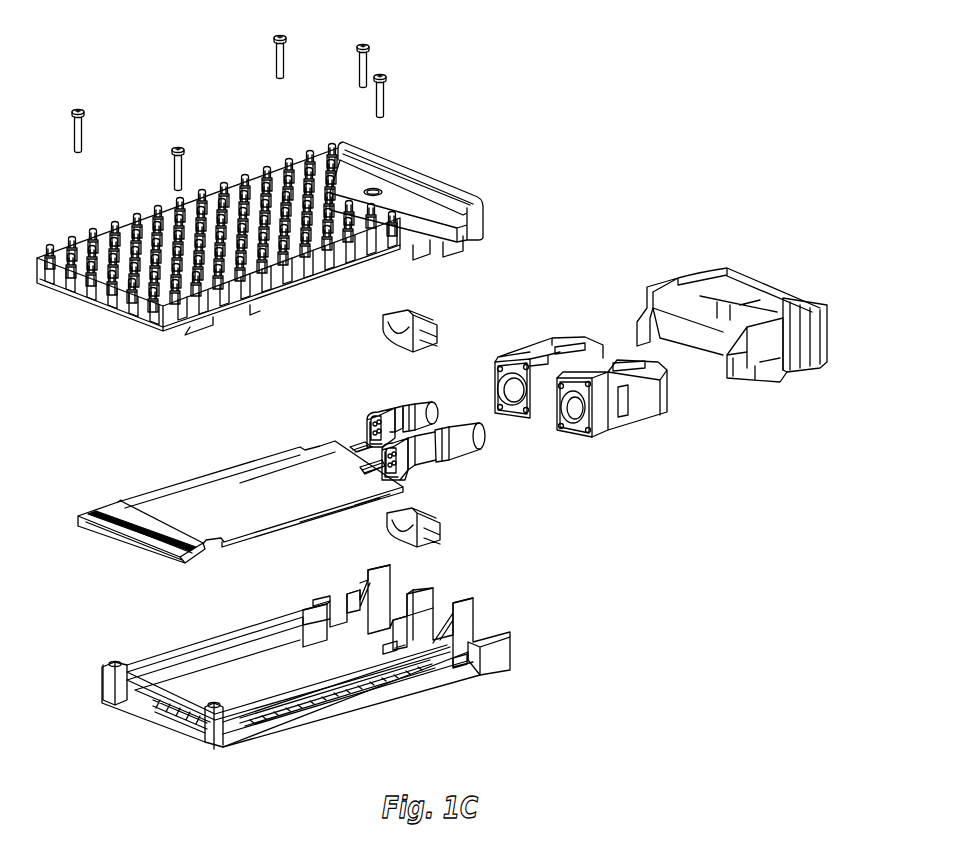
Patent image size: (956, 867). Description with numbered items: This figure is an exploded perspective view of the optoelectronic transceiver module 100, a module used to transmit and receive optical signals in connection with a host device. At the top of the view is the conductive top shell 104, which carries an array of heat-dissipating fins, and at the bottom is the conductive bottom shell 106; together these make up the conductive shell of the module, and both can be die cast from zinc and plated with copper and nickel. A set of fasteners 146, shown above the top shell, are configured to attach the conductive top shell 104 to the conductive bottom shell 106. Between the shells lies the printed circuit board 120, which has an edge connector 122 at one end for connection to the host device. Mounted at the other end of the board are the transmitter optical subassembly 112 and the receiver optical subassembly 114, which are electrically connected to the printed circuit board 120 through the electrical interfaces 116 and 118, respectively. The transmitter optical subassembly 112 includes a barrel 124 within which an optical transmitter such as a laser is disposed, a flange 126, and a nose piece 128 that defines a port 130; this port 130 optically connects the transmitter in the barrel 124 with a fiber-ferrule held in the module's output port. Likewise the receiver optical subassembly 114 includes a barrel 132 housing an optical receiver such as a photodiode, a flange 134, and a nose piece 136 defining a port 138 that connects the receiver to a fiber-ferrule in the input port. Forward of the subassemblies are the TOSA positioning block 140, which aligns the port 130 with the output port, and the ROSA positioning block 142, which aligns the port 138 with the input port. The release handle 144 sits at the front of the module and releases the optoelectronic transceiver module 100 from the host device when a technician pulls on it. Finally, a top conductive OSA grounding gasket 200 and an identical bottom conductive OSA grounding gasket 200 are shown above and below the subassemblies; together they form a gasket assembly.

The optoelectronic transceiver module 100 is at (135, 62).
The conductive top shell 104 is at (451, 229).
The conductive bottom shell 106 is at (415, 680).
The transmitter optical subassembly (TOSA) 112 is at (470, 488).
The receiver optical subassembly (ROSA) 114 is at (364, 384).
The electrical interface 116 is at (418, 470).
The electrical interface 118 is at (362, 446).
The printed circuit board (PCB) 120 is at (233, 494).
The edge connector 122 is at (178, 560).
The barrel 124 is at (433, 456).
The flange 126 is at (451, 447).
The nose piece 128 is at (470, 442).
The port 130 is at (495, 428).
The barrel 132 is at (377, 405).
The flange 134 is at (391, 402).
The nose piece 136 is at (404, 403).
The port 138 is at (448, 404).
The TOSA positioning block 140 is at (644, 433).
The ROSA positioning block 142 is at (532, 333).
The release handle 144 is at (670, 262).
The fasteners 146 is at (174, 162).
The conductive OSA grounding gasket 200 is at (386, 328).